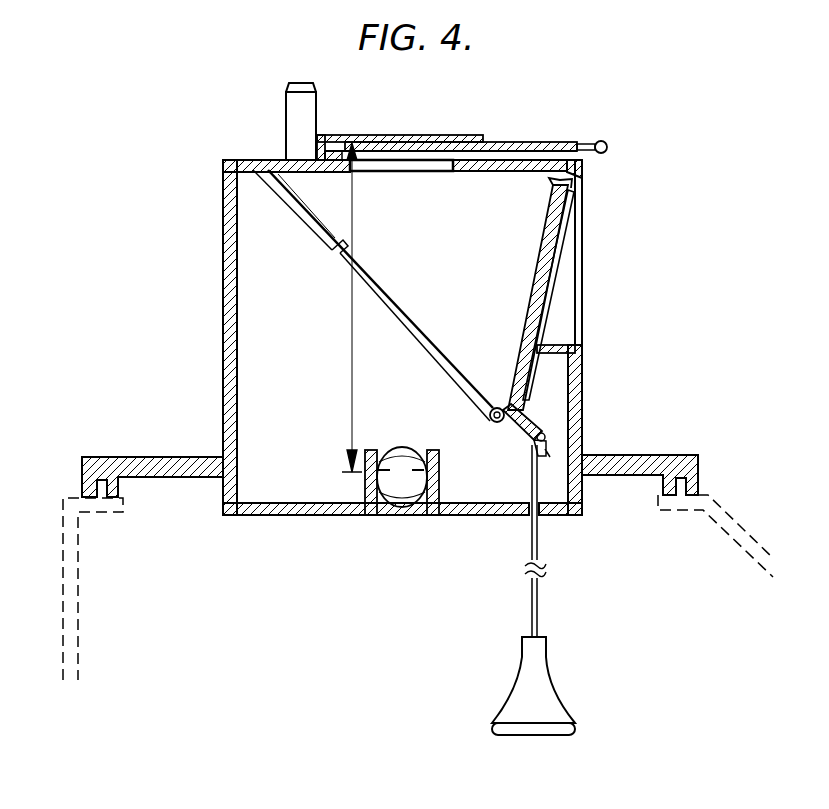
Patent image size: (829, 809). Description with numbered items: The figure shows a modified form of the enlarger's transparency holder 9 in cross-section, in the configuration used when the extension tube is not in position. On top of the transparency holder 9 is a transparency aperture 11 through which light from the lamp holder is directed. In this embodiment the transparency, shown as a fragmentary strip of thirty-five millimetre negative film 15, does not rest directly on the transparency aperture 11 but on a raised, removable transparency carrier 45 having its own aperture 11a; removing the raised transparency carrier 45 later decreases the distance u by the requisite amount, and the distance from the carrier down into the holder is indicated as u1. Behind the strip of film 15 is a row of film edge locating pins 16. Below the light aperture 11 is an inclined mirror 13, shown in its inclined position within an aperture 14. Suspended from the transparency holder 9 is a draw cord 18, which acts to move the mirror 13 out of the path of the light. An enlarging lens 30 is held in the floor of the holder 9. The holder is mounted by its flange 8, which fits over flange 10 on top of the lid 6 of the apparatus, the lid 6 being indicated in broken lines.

The lid 6 is at (72, 541).
The flange 8 is at (650, 462).
The transparency holder 9 is at (228, 198).
The flange 10 is at (100, 487).
The transparency aperture 11 is at (408, 170).
The aperture 11a is at (392, 140).
The inclined mirror 13 is at (550, 257).
The aperture 14 is at (572, 231).
The strip of 35 mm negative film 15 is at (382, 134).
The film edge locating pins 16 is at (288, 86).
The draw cord 18 is at (546, 639).
The enlarging lens 30 is at (403, 478).
The raised transparency carrier 45 is at (528, 140).
The distance u1 is at (350, 323).